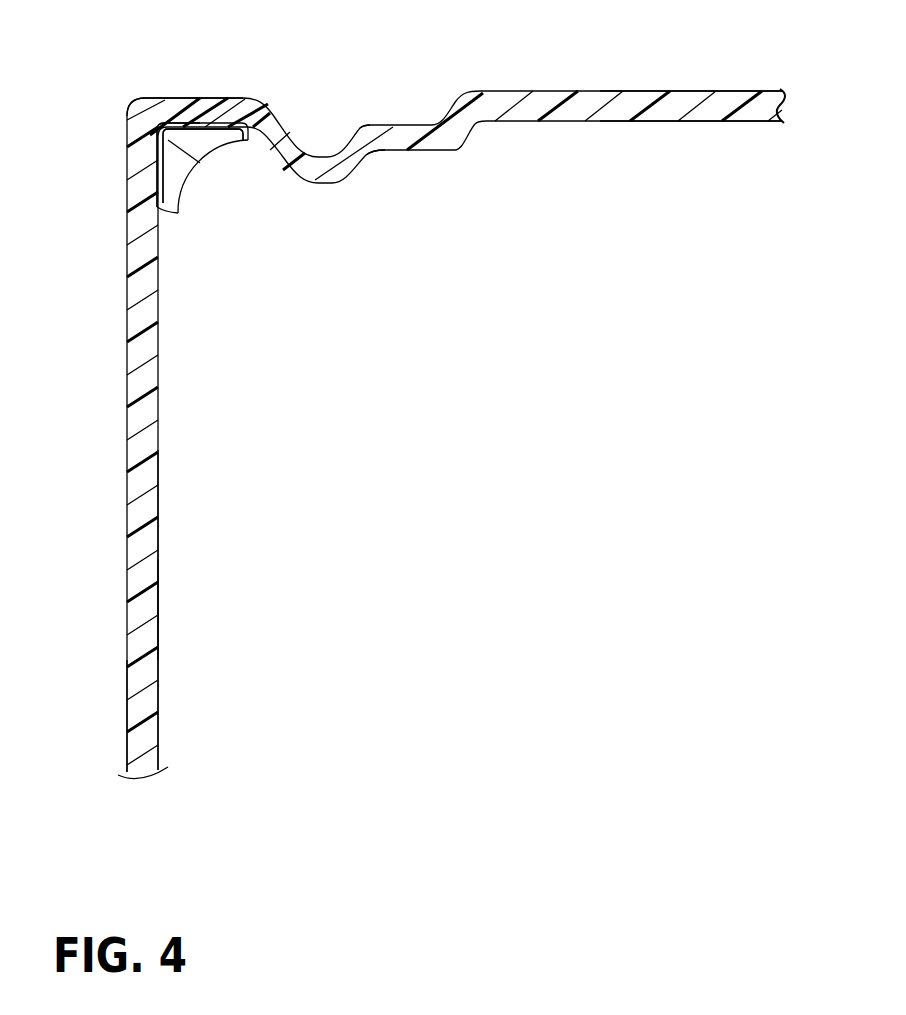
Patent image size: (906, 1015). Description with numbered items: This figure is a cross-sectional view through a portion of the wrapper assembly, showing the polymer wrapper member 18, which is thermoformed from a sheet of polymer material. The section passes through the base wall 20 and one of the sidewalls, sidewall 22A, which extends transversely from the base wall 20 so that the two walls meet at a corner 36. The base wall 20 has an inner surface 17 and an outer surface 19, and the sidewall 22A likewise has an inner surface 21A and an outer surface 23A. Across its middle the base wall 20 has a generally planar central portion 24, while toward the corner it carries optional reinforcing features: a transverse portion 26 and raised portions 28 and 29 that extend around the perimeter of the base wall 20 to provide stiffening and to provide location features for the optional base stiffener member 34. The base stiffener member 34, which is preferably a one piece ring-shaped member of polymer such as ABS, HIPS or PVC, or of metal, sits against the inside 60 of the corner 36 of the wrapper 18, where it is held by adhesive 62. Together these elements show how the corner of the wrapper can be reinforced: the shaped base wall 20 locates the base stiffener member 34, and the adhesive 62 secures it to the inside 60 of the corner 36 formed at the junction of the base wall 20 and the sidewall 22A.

The inner surface 17 is at (763, 123).
The polymer wrapper member 18 is at (123, 458).
The outer surface 19 is at (728, 90).
The base wall 20 is at (607, 90).
The inner surface 21A is at (158, 640).
The sidewall 22A is at (162, 558).
The outer surface 23A is at (127, 675).
The central portion 24 is at (622, 123).
The transverse portion 26 is at (470, 133).
The raised portion 28 is at (385, 152).
The raised portion 29 is at (325, 187).
The base stiffener member 34 is at (202, 164).
The corner 36 is at (135, 105).
The inside 60 is at (234, 157).
The adhesive 62 is at (160, 183).